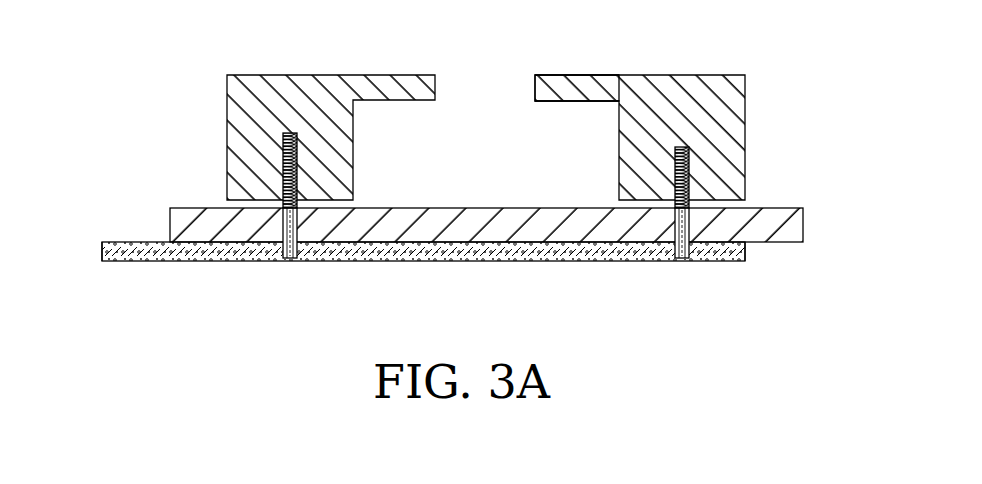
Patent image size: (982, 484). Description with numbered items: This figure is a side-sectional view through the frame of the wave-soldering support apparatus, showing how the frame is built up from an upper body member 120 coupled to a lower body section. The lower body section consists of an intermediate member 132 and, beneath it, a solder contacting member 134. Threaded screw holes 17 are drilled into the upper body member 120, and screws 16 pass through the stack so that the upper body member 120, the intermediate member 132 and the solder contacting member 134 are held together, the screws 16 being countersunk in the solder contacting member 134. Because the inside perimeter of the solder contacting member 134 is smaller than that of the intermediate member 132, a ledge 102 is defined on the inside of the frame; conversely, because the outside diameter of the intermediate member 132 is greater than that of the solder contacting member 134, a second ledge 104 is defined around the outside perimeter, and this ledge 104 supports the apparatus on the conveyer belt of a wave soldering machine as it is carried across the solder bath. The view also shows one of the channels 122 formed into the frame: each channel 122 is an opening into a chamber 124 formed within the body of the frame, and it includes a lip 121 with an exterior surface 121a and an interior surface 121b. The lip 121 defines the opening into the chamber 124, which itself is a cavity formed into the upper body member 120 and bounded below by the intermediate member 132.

The screws 16 is at (290, 262).
The threaded screw holes 17 is at (286, 134).
The ledge 102 is at (128, 240).
The second ledge 104 is at (788, 248).
The upper body member 120 is at (745, 143).
The lip 121 is at (540, 88).
The exterior surface of lip 121a is at (577, 70).
The interior surface of lip 121b is at (557, 110).
The channel 122 is at (444, 63).
The chamber 124 is at (394, 186).
The intermediate member 132 is at (803, 226).
The solder contacting member 134 is at (748, 253).